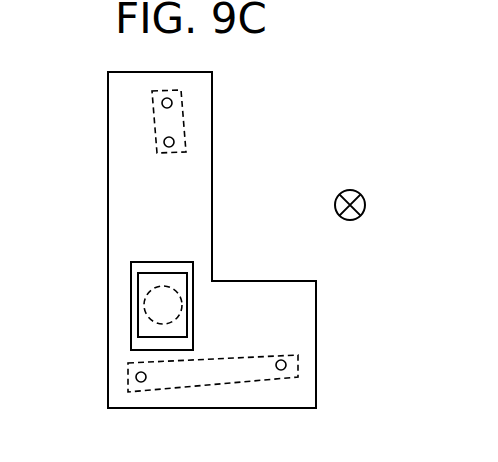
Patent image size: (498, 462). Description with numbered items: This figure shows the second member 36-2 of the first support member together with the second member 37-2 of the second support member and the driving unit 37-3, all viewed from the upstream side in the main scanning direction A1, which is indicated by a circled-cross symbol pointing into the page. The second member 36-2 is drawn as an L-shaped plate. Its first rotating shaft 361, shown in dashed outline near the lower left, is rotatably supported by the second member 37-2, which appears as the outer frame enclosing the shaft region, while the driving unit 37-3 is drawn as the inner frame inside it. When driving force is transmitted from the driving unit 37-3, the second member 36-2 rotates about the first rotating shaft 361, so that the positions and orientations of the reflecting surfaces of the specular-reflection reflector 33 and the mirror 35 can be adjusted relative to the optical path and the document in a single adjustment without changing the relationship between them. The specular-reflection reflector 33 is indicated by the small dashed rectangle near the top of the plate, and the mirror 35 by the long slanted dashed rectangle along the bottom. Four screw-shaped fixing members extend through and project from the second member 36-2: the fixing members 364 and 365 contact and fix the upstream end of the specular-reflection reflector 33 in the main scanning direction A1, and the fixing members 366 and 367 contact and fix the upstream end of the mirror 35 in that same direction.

The second member 36-2 is at (242, 281).
The specular-reflection reflector 33 is at (182, 103).
The fixing member 364 is at (162, 103).
The fixing member 365 is at (164, 142).
The second member 37-2 is at (145, 262).
The driving unit 37-3 is at (131, 311).
The first rotating shaft 361 is at (150, 290).
The mirror 35 is at (300, 355).
The fixing member 366 is at (286, 365).
The fixing member 367 is at (137, 377).
The main scanning direction A1 is at (351, 188).